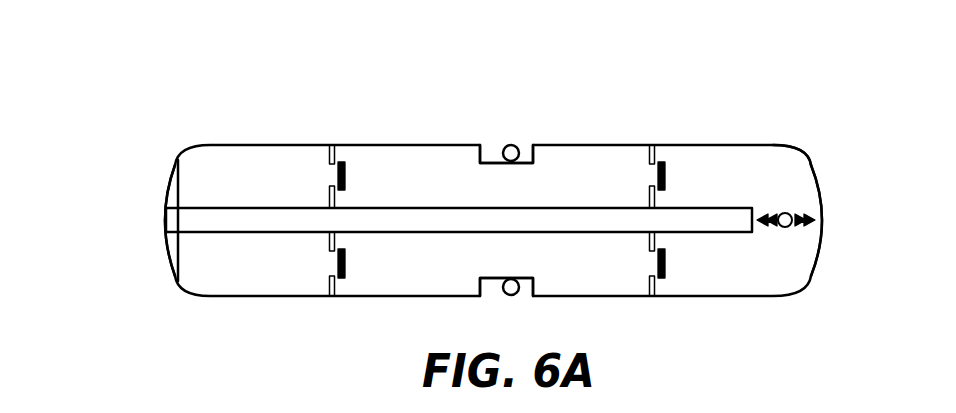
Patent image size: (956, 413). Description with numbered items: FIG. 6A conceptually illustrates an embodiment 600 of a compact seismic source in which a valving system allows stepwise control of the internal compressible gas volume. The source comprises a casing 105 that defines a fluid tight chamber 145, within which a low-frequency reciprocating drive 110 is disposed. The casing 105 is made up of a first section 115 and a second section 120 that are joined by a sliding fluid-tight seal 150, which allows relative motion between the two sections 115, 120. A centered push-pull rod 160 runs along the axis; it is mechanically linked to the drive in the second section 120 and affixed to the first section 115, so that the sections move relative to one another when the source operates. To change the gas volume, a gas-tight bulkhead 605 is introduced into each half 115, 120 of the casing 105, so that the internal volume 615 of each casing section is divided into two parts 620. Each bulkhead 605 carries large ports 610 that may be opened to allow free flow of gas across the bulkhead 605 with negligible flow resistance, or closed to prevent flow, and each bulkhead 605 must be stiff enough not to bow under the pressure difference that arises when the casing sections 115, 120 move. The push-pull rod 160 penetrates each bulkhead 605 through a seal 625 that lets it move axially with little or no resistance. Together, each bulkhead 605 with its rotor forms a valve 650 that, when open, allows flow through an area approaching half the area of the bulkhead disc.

The seismic source embodiment 600 is at (118, 40).
The casing 105 is at (190, 131).
The low-frequency reciprocating drive 110 is at (780, 186).
The first section 115 is at (166, 240).
The second section 120 is at (818, 246).
The fluid tight chamber 145 is at (521, 262).
The sliding fluid-tight seal 150 is at (506, 106).
The push-pull rod 160 is at (238, 207).
The gas-tight bulkhead 605 is at (341, 162).
The port 610 is at (330, 180).
The internal volume 615 is at (477, 186).
The part 620 is at (314, 186).
The seal 625 is at (341, 210).
The valve 650 is at (333, 141).